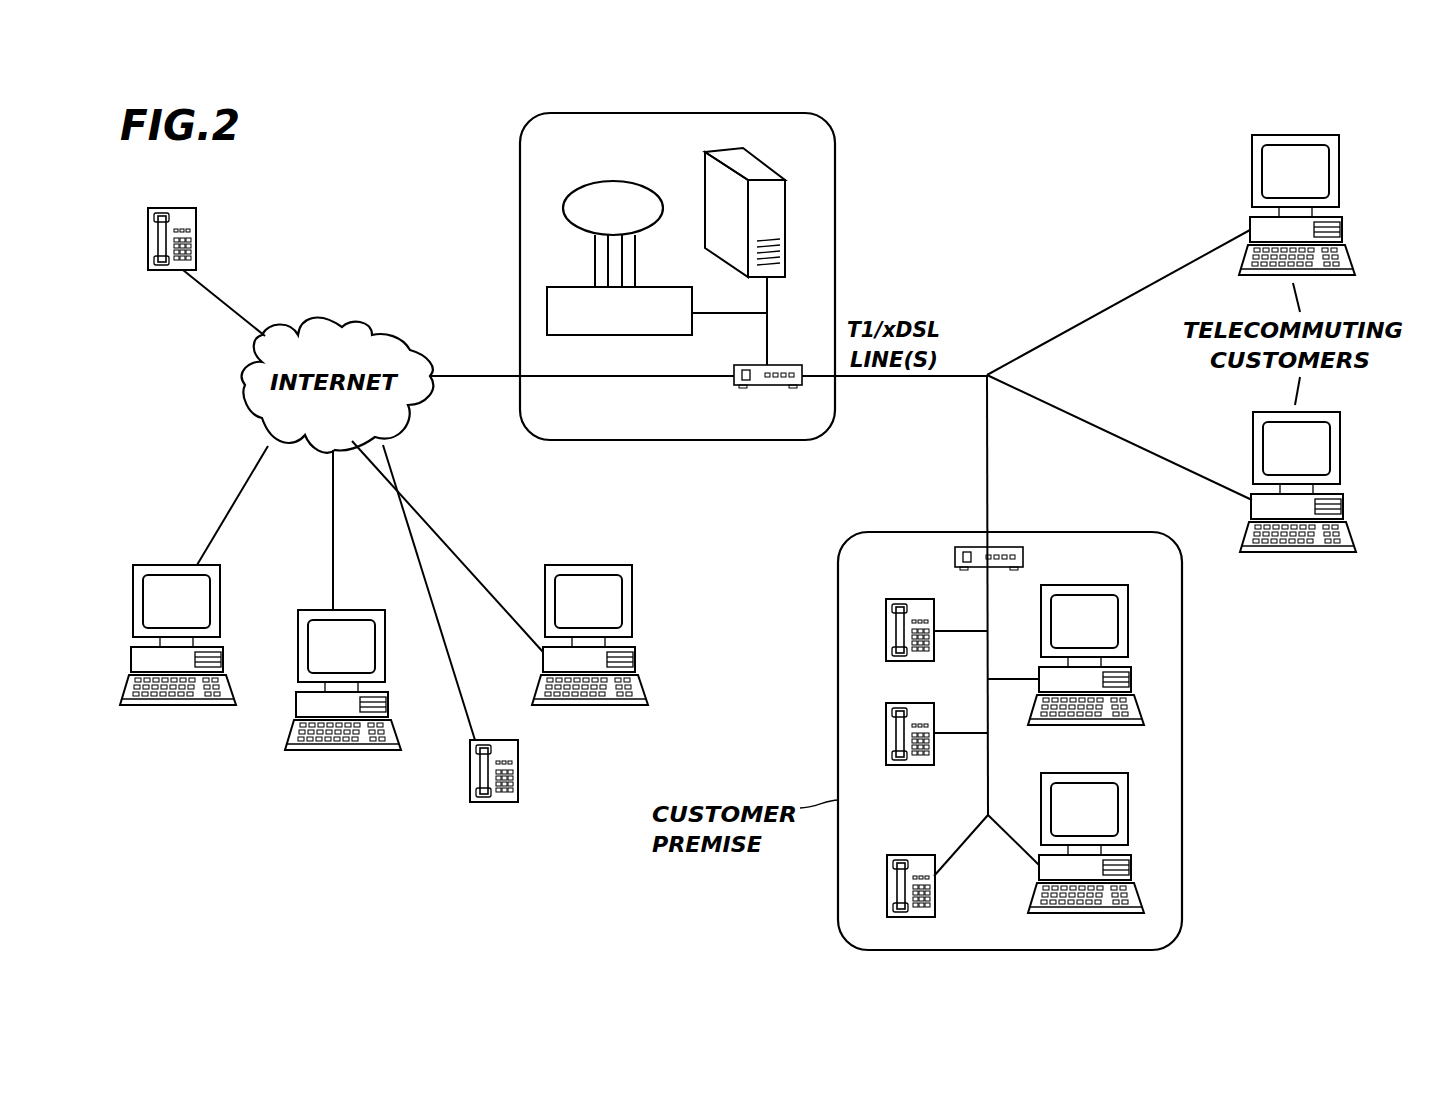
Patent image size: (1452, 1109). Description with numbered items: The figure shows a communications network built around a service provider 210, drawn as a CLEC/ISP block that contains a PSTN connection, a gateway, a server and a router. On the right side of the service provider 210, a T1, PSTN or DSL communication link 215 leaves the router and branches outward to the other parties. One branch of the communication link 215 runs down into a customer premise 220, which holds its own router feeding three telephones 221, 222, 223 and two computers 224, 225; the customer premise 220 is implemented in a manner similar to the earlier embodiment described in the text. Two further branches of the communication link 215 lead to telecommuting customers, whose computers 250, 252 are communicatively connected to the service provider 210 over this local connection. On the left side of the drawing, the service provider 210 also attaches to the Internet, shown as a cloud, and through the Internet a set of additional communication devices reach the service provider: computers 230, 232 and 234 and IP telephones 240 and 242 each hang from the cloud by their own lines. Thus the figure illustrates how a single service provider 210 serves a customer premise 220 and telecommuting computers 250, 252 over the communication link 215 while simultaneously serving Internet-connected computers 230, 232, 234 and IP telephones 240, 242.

The service provider 210 is at (835, 193).
The communication link 215 is at (975, 375).
The customer premise 220 is at (1022, 741).
The telephone 221 is at (886, 630).
The telephone 222 is at (886, 740).
The telephone 223 is at (887, 877).
The computer 224 is at (1128, 595).
The computer 225 is at (1128, 793).
The computer 230 is at (632, 598).
The computer 232 is at (325, 752).
The computer 234 is at (172, 707).
The IP telephone 240 is at (198, 243).
The IP telephone 242 is at (490, 803).
The computer 250 is at (1338, 181).
The computer 252 is at (1342, 457).